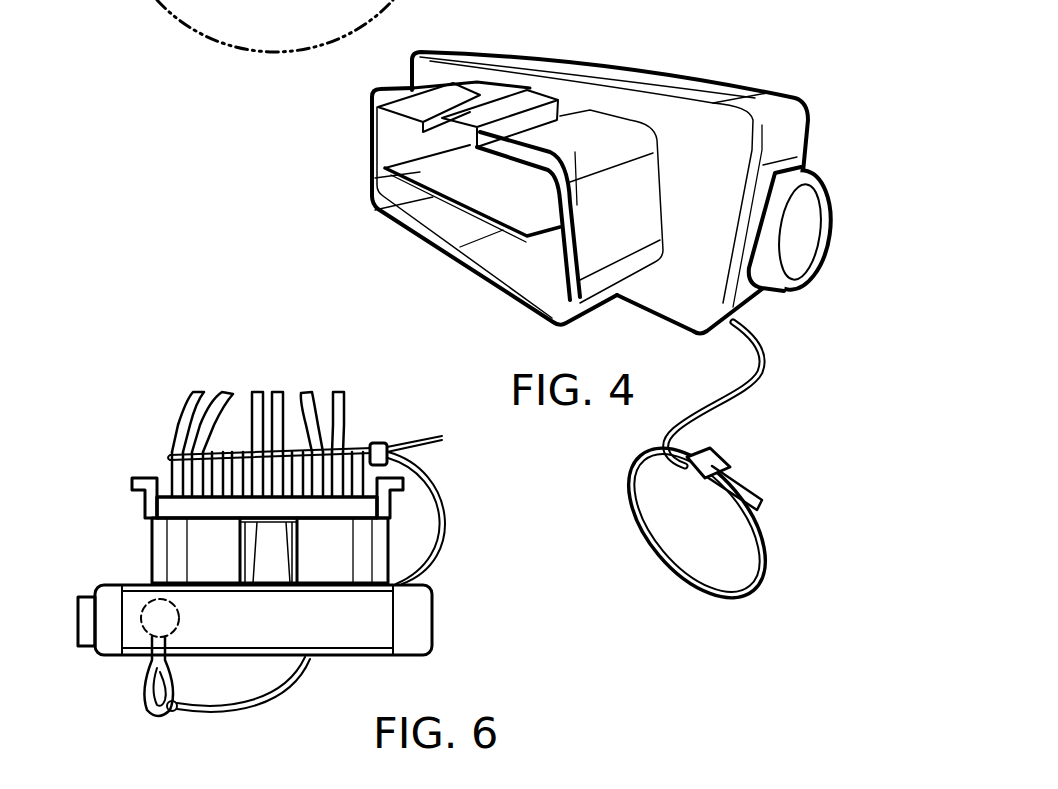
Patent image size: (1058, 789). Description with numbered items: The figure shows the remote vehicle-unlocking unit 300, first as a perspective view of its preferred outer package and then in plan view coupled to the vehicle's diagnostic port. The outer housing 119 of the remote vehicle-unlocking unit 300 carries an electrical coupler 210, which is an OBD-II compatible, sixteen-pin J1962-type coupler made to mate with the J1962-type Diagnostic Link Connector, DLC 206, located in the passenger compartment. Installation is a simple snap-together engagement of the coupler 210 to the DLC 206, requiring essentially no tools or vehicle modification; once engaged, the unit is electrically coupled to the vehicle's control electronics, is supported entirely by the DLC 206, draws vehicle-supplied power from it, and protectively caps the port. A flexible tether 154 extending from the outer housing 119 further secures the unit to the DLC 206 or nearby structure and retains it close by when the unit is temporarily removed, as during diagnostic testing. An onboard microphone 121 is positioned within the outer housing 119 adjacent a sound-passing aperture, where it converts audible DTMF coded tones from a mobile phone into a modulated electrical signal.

In FIG. 4, the outer housing 119 is at (655, 70).
In FIG. 4, the onboard microphone 121 is at (800, 262).
In FIG. 4, the flexible tether 154 is at (768, 543).
In FIG. 6, the flexible tether 154 is at (143, 707).
In FIG. 6, the Diagnostic Link Connector 206 is at (147, 503).
In FIG. 4, the electrical coupler 210 is at (360, 147).
In FIG. 6, the electrical coupler 210 is at (173, 555).
In FIG. 4, the remote vehicle-unlocking unit 300 is at (397, 250).
In FIG. 6, the remote vehicle-unlocking unit 300 is at (442, 622).